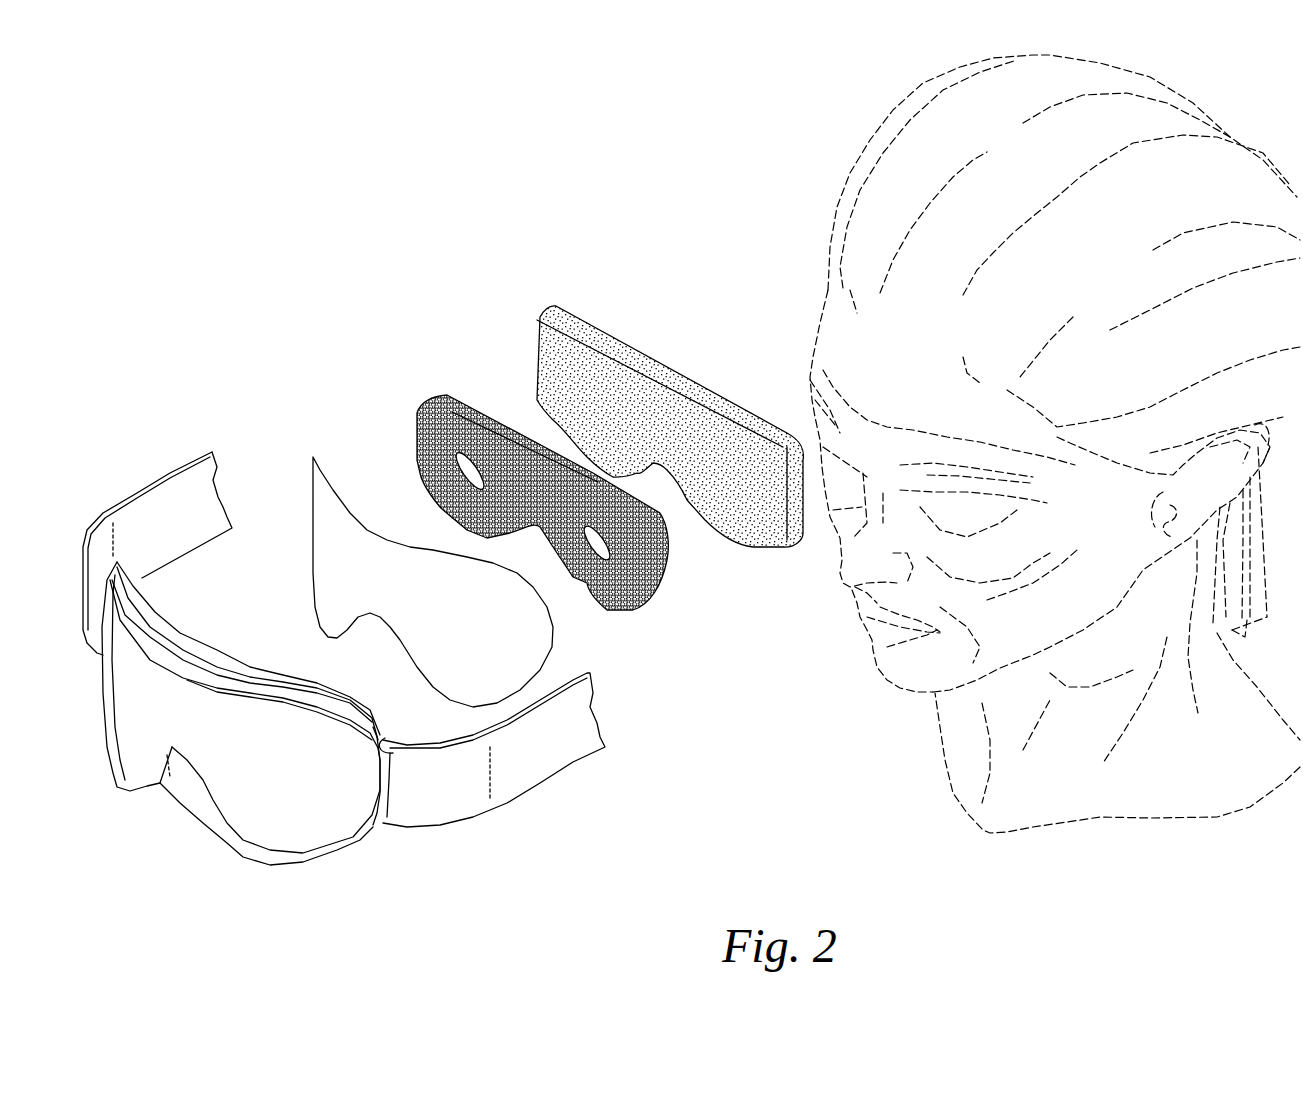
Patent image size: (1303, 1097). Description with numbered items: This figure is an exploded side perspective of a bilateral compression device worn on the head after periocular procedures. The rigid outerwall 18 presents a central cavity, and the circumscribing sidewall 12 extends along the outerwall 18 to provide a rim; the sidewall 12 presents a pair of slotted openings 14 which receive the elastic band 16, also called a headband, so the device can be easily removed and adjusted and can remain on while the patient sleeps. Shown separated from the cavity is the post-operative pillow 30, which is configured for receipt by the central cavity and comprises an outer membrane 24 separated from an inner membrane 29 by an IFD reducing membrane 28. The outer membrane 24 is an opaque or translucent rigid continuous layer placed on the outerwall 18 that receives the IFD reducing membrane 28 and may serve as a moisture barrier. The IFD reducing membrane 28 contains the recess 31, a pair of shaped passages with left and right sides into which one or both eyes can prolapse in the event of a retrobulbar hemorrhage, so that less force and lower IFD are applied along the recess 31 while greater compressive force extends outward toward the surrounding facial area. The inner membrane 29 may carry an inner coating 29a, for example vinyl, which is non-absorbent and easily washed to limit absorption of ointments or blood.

The circumscribing sidewall 12 is at (360, 843).
The slotted openings 14 is at (393, 755).
The elastic band 16 is at (543, 760).
The outerwall 18 is at (240, 854).
The outer membrane 24 is at (328, 563).
The IFD reducing membrane 28 is at (657, 598).
The inner membrane 29 is at (773, 540).
The inner coating 29a is at (647, 352).
The post-operative pillow 30 is at (507, 253).
The recess 31 is at (462, 462).